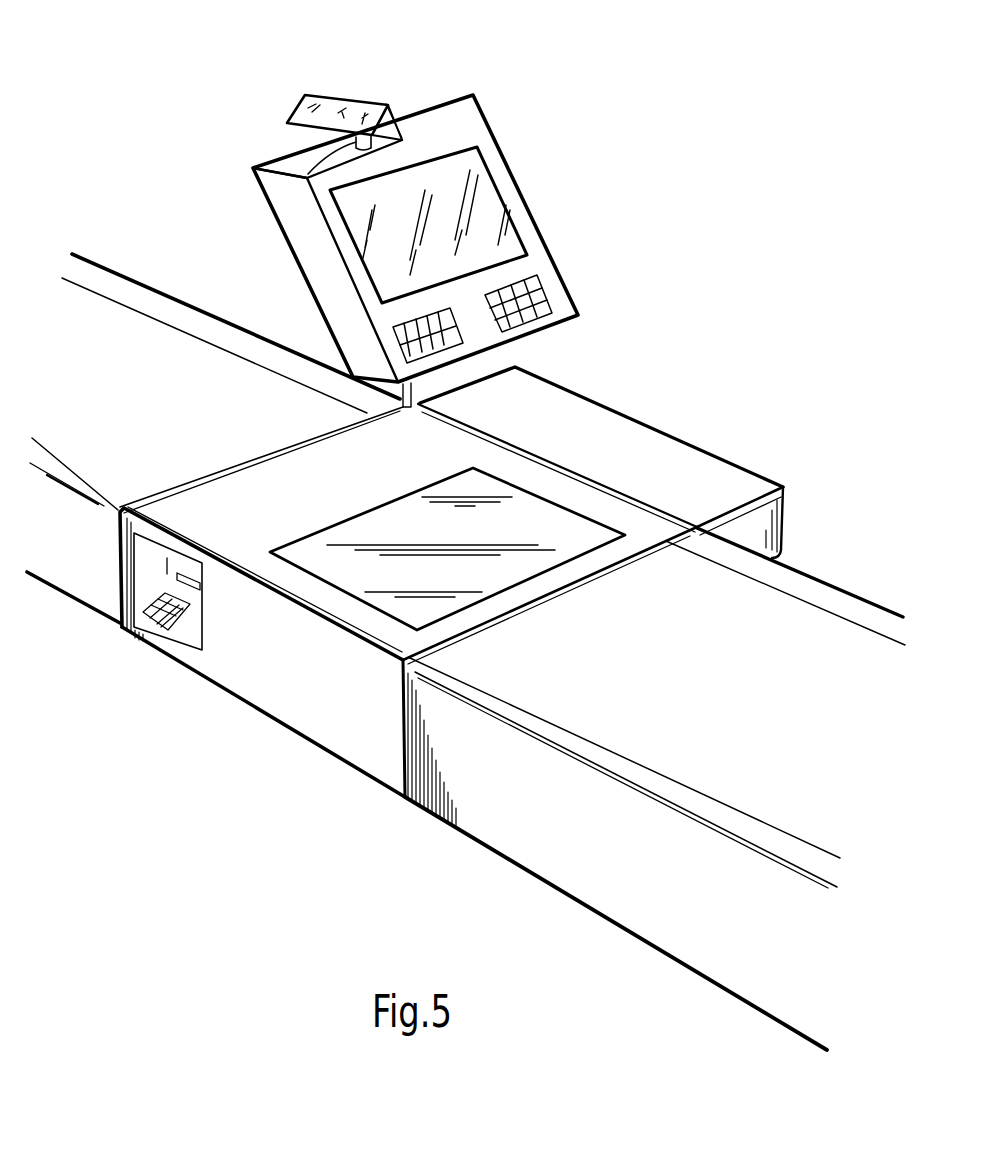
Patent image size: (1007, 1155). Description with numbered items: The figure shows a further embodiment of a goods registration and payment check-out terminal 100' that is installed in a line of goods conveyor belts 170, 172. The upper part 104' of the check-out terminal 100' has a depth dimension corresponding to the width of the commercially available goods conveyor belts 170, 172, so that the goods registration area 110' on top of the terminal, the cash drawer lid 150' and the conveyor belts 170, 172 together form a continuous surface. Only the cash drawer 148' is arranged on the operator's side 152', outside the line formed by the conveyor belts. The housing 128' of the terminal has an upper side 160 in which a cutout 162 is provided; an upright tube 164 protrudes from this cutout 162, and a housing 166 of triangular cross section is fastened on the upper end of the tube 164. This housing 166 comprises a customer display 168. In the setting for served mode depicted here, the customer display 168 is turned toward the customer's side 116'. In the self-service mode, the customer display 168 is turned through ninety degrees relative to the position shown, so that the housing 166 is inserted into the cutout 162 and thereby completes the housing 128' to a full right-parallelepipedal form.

The check-out terminal 100' is at (478, 414).
The upper part 104' is at (408, 617).
The goods registration area 110' is at (447, 549).
The customer's side 116' is at (263, 665).
The housing 128' is at (387, 204).
The cash drawer 148' is at (600, 445).
The cash drawer lid 150' is at (601, 449).
The operator's side 152' is at (778, 414).
The upper side 160 is at (426, 104).
The cutout 162 is at (289, 156).
The upright tube 164 is at (308, 175).
The housing 166 is at (312, 86).
The customer display 168 is at (342, 99).
The goods conveyor belt 170 is at (142, 406).
The goods conveyor belt 172 is at (694, 682).